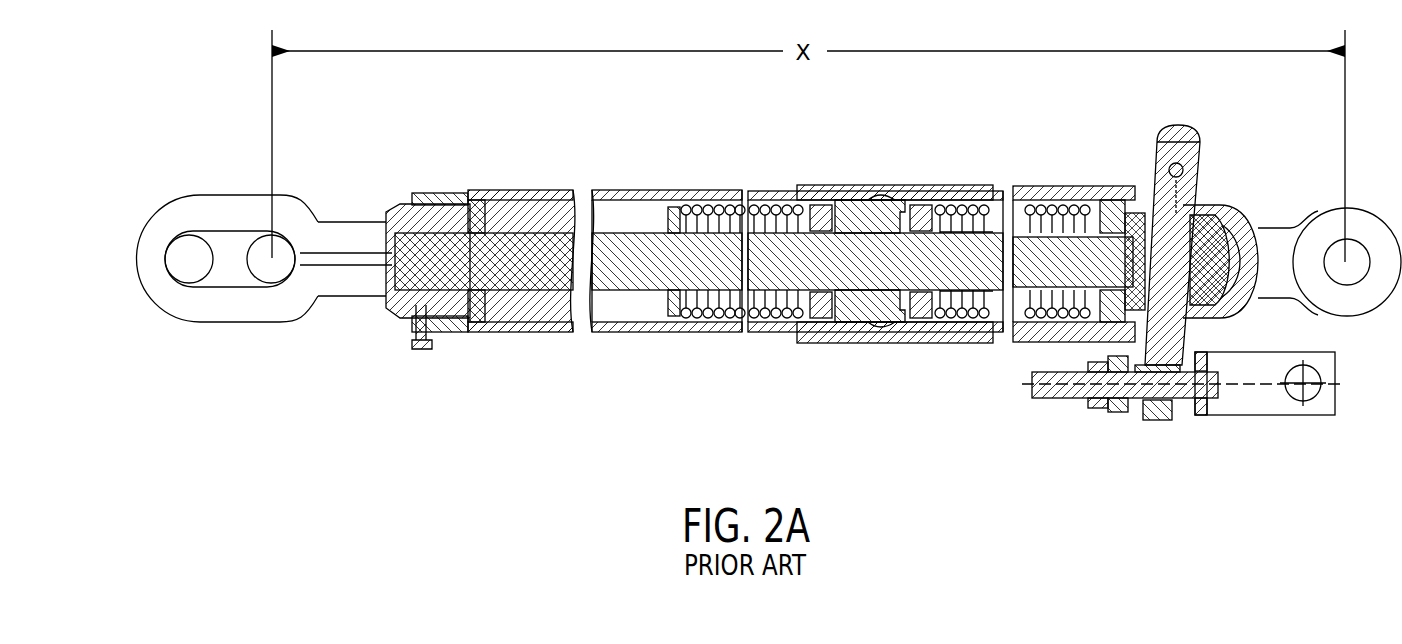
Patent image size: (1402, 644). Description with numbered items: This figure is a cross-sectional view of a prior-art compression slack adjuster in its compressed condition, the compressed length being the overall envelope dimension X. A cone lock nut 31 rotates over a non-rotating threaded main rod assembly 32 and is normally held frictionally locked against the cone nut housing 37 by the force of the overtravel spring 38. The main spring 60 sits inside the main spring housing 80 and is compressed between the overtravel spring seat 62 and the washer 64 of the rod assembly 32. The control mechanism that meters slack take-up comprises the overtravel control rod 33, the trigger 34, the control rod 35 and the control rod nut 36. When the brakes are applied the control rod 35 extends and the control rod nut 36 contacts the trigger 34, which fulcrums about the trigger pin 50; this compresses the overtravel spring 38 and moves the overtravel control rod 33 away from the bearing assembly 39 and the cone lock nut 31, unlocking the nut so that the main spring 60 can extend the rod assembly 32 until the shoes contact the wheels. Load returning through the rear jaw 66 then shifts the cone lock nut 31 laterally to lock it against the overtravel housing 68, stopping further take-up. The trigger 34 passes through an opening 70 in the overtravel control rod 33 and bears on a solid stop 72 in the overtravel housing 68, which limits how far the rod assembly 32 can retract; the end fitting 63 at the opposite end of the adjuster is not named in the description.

The cone lock nut 31 is at (890, 200).
The main rod assembly 32 is at (615, 230).
The overtravel control rod 33 is at (1013, 200).
The trigger 34 is at (1200, 198).
The control rod 35 is at (1242, 415).
The control rod nut 36 is at (1120, 412).
The cone nut housing 37 is at (872, 343).
The overtravel spring 38 is at (985, 340).
The bearing assembly 39 is at (920, 340).
The trigger pin 50 is at (1178, 168).
The main spring 60 is at (766, 197).
The overtravel spring seat 62 is at (841, 338).
The right eye end fitting 63 is at (1360, 312).
The washer 64 is at (672, 318).
The rear jaw 66 is at (273, 307).
The overtravel housing 68 is at (972, 185).
The opening 70 is at (1133, 235).
The solid stop 72 is at (1112, 225).
The main spring housing 80 is at (668, 190).